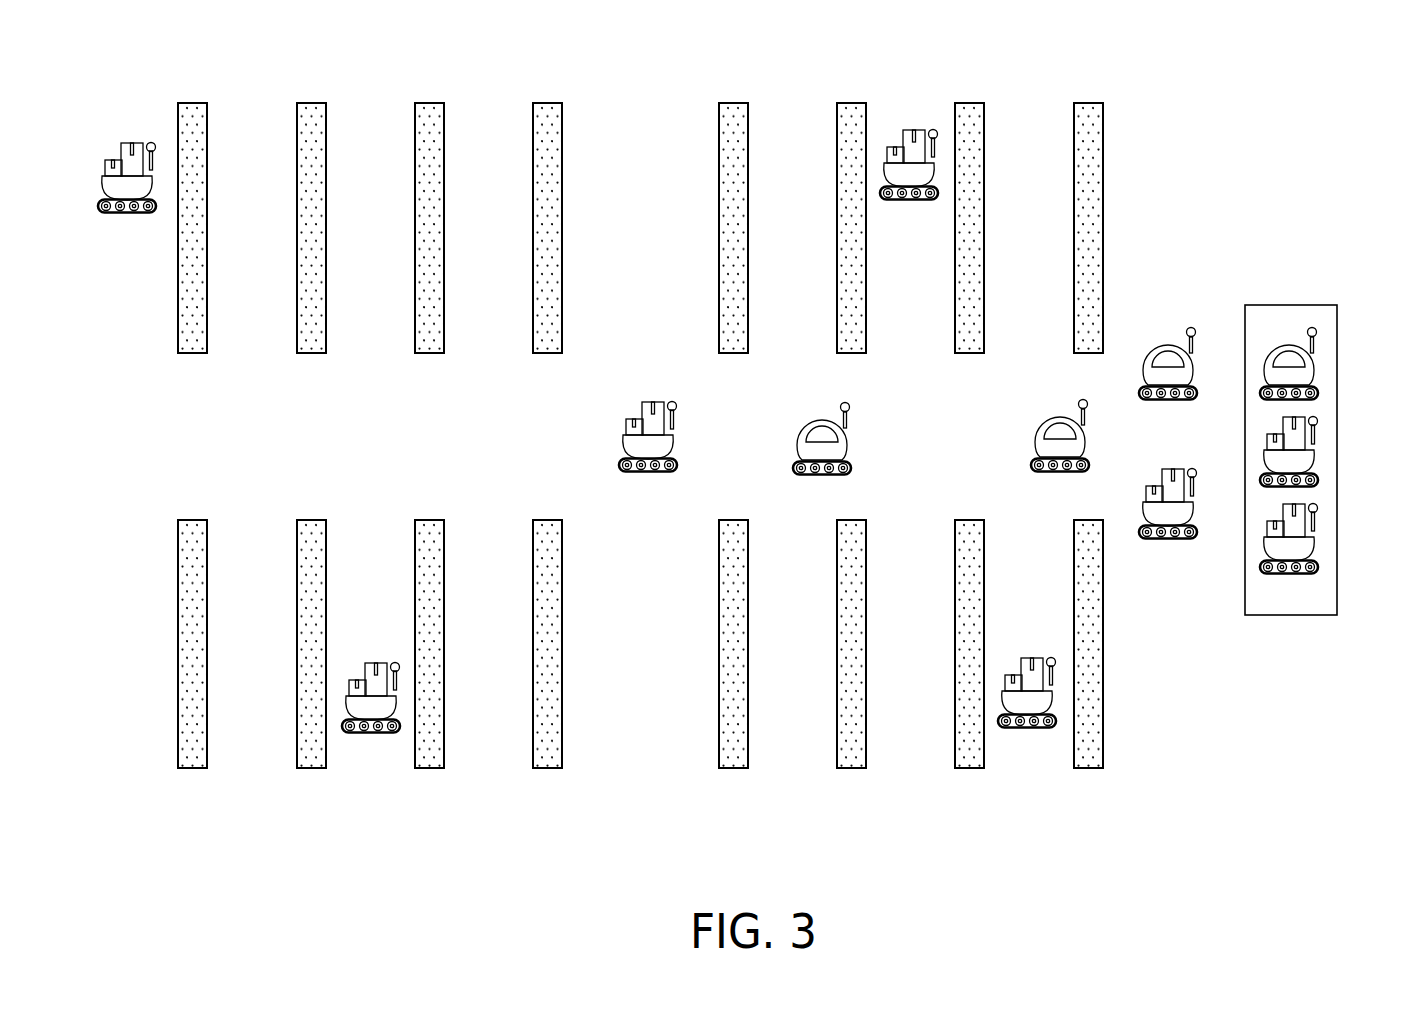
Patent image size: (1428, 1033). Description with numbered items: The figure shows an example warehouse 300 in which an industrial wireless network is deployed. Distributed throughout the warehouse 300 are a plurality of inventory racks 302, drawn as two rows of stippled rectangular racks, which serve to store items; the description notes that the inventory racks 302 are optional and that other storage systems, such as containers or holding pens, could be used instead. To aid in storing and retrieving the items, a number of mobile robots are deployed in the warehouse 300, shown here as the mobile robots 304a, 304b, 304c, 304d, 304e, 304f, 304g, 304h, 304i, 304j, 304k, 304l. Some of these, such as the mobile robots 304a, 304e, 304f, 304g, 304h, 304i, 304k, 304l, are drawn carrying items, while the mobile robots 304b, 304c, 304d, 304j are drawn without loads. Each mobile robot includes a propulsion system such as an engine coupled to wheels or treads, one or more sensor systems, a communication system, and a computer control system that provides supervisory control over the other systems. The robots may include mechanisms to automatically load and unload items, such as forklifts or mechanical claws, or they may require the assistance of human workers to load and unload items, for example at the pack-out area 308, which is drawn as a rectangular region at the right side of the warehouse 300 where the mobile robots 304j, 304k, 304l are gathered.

The warehouse 300 is at (1292, 116).
The inventory racks 302 is at (1108, 95).
The mobile robot 304a is at (650, 472).
The mobile robot 304b is at (822, 475).
The mobile robot 304c is at (1062, 473).
The mobile robot 304d is at (1168, 401).
The mobile robot 304e is at (889, 200).
The mobile robot 304f is at (1003, 728).
The mobile robot 304g is at (108, 213).
The mobile robot 304h is at (346, 733).
The mobile robot 304i is at (1167, 540).
The mobile robot 304j is at (1313, 372).
The mobile robot 304k is at (1310, 457).
The mobile robot 304l is at (1305, 533).
The pack-out area 308 is at (1293, 303).